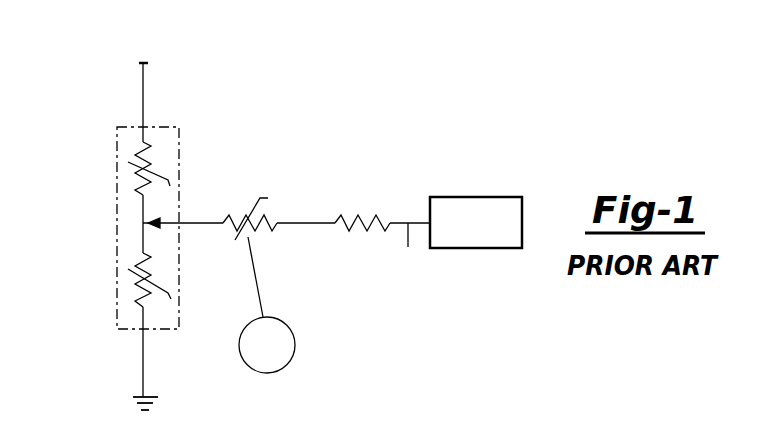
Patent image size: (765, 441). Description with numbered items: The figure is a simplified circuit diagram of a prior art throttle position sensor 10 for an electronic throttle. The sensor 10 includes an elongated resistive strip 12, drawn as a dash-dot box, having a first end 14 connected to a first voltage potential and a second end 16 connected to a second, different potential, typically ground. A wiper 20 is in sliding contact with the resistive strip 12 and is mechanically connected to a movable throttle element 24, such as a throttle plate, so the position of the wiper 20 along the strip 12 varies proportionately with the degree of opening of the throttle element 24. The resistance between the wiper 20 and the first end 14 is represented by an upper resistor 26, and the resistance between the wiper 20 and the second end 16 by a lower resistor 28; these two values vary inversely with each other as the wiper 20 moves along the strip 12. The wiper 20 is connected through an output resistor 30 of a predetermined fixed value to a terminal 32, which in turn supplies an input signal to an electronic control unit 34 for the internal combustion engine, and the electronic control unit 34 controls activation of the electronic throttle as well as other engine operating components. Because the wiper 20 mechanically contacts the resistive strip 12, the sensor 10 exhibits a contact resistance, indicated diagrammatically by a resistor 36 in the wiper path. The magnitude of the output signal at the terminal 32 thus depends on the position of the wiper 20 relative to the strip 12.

The throttle position sensor 10 is at (306, 165).
The resistive strip 12 is at (117, 317).
The first end 14 is at (172, 127).
The second end 16 is at (168, 333).
The wiper 20 is at (166, 222).
The throttle element 24 is at (272, 373).
The upper resistor 26 is at (142, 173).
The lower resistor 28 is at (142, 288).
The output resistor 30 is at (358, 216).
The terminal 32 is at (408, 247).
The electronic control unit 34 is at (475, 197).
The resistor 36 is at (235, 240).